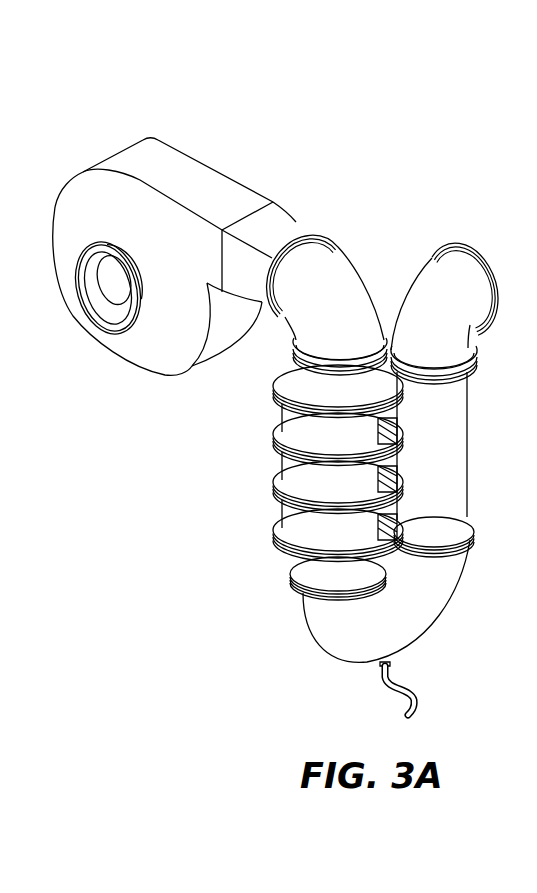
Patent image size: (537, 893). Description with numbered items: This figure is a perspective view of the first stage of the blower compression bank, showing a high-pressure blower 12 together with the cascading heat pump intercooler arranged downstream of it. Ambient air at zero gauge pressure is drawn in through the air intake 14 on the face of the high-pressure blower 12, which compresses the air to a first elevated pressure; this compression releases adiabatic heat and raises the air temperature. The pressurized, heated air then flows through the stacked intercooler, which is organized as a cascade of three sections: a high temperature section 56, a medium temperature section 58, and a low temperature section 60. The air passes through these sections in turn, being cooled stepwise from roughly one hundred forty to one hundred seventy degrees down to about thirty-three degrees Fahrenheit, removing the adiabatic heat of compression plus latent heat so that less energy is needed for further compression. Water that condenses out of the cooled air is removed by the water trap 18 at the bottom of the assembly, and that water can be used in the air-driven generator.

The high-pressure blower 12 is at (203, 160).
The air intake 14 is at (107, 332).
The water trap 18 is at (403, 692).
The high temperature section 56 is at (310, 436).
The medium temperature section 58 is at (310, 483).
The low temperature section 60 is at (310, 530).